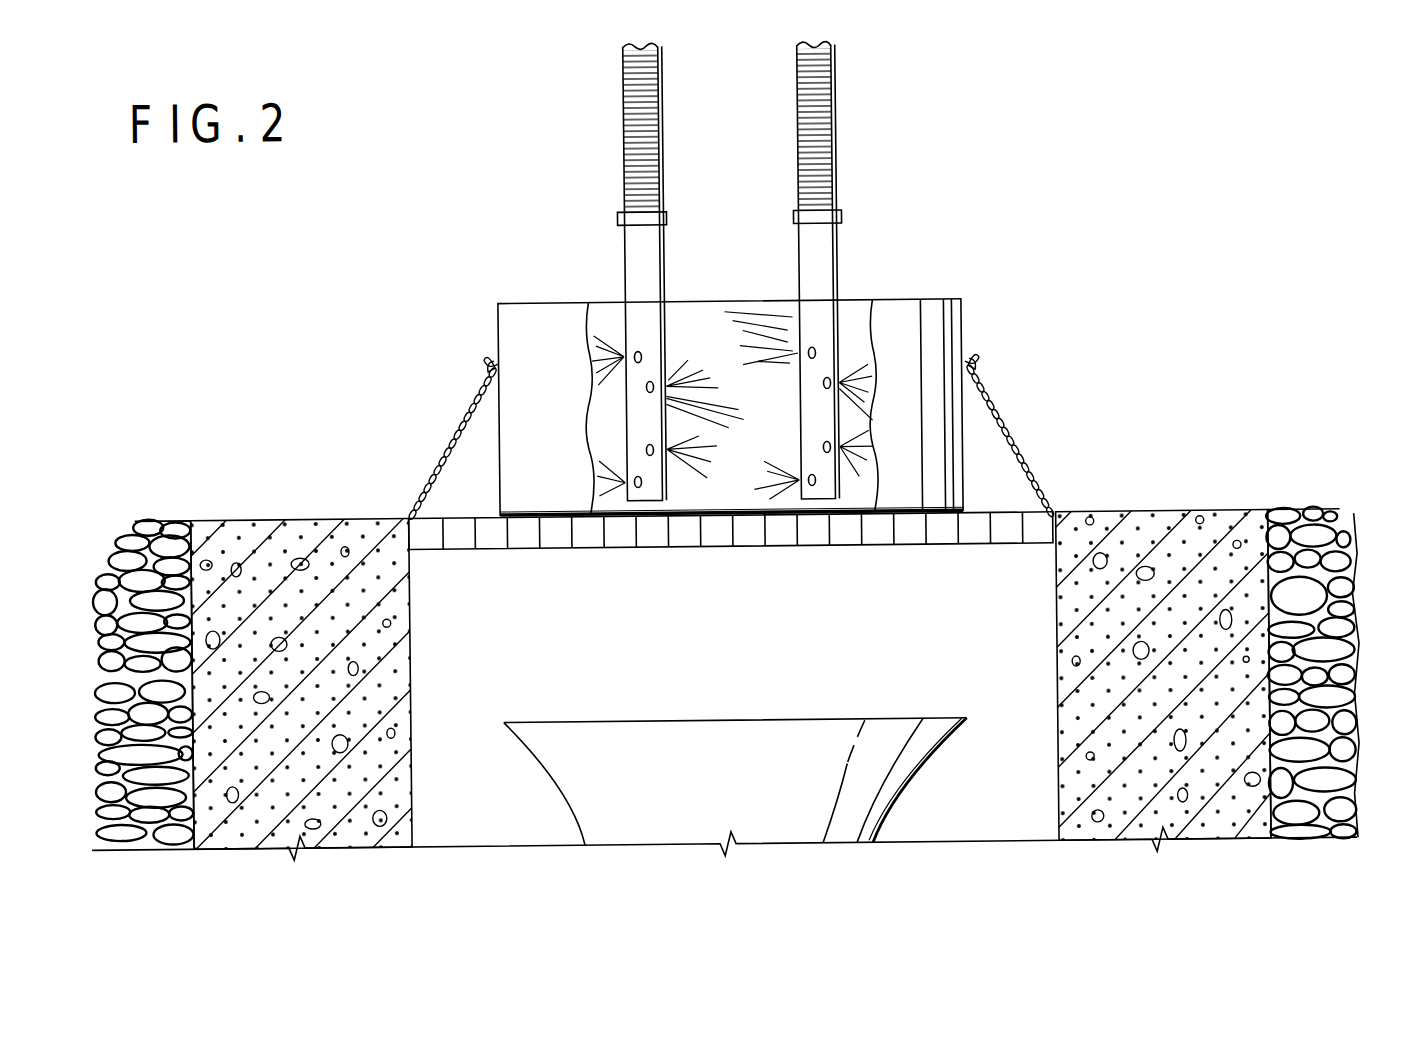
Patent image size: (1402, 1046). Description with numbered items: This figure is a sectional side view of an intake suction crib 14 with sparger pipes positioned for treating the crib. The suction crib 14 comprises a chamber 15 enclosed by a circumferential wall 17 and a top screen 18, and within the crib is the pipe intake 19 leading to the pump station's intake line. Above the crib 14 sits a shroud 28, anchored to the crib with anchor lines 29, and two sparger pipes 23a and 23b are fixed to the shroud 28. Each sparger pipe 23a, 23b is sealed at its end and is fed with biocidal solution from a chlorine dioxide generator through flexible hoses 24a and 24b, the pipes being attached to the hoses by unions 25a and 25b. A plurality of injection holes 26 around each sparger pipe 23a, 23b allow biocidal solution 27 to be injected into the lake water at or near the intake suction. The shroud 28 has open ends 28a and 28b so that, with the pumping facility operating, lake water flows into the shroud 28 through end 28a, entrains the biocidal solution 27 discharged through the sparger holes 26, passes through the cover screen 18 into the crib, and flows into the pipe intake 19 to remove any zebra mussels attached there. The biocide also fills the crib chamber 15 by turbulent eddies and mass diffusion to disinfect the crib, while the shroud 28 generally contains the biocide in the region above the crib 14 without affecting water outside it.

The suction crib 14 is at (1119, 334).
The chamber 15 is at (718, 634).
The circumferential wall 17 is at (409, 645).
The top screen 18 is at (935, 543).
The pipe intake 19 is at (649, 721).
The sparger pipe 23a is at (638, 287).
The sparger pipe 23b is at (825, 288).
The flexible hose 24a is at (642, 132).
The flexible hose 24b is at (826, 131).
The union 25a is at (628, 217).
The union 25b is at (836, 219).
The injection holes 26 is at (648, 449).
The biocidal solution 27 is at (782, 360).
The shroud 28 is at (534, 328).
The open end 28a is at (713, 300).
The open end 28b is at (850, 514).
The anchor lines 29 is at (456, 432).